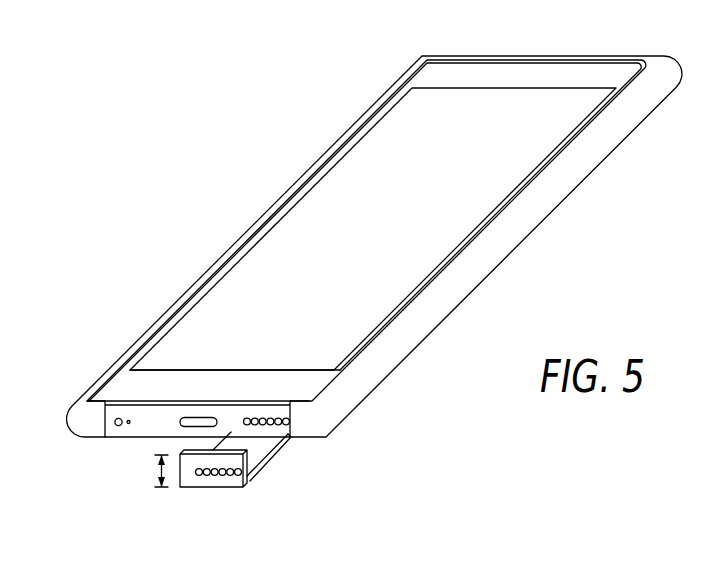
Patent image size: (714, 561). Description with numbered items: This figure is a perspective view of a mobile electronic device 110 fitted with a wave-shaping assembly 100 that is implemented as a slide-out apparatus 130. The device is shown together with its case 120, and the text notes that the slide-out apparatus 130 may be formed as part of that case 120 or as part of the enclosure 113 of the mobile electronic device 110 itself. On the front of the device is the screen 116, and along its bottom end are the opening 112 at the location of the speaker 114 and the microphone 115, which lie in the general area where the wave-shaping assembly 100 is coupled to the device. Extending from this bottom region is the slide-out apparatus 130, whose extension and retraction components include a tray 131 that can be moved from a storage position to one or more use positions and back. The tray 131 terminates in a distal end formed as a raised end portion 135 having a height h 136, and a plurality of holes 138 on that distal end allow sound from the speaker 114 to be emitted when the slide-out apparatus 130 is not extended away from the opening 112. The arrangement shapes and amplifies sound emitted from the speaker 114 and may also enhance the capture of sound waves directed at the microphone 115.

The wave-shaping assembly 100 is at (212, 487).
The mobile electronic device 110 is at (290, 207).
The opening 112 is at (150, 412).
The enclosure 113 is at (143, 385).
The speaker 114 is at (273, 395).
The microphone 115 is at (114, 422).
The screen 116 is at (398, 141).
The case 120 is at (543, 55).
The slide-out apparatus 130 is at (283, 459).
The tray 131 is at (292, 432).
The raised end portion 135 is at (188, 473).
The height h 136 is at (160, 473).
The plurality of holes 138 is at (256, 479).